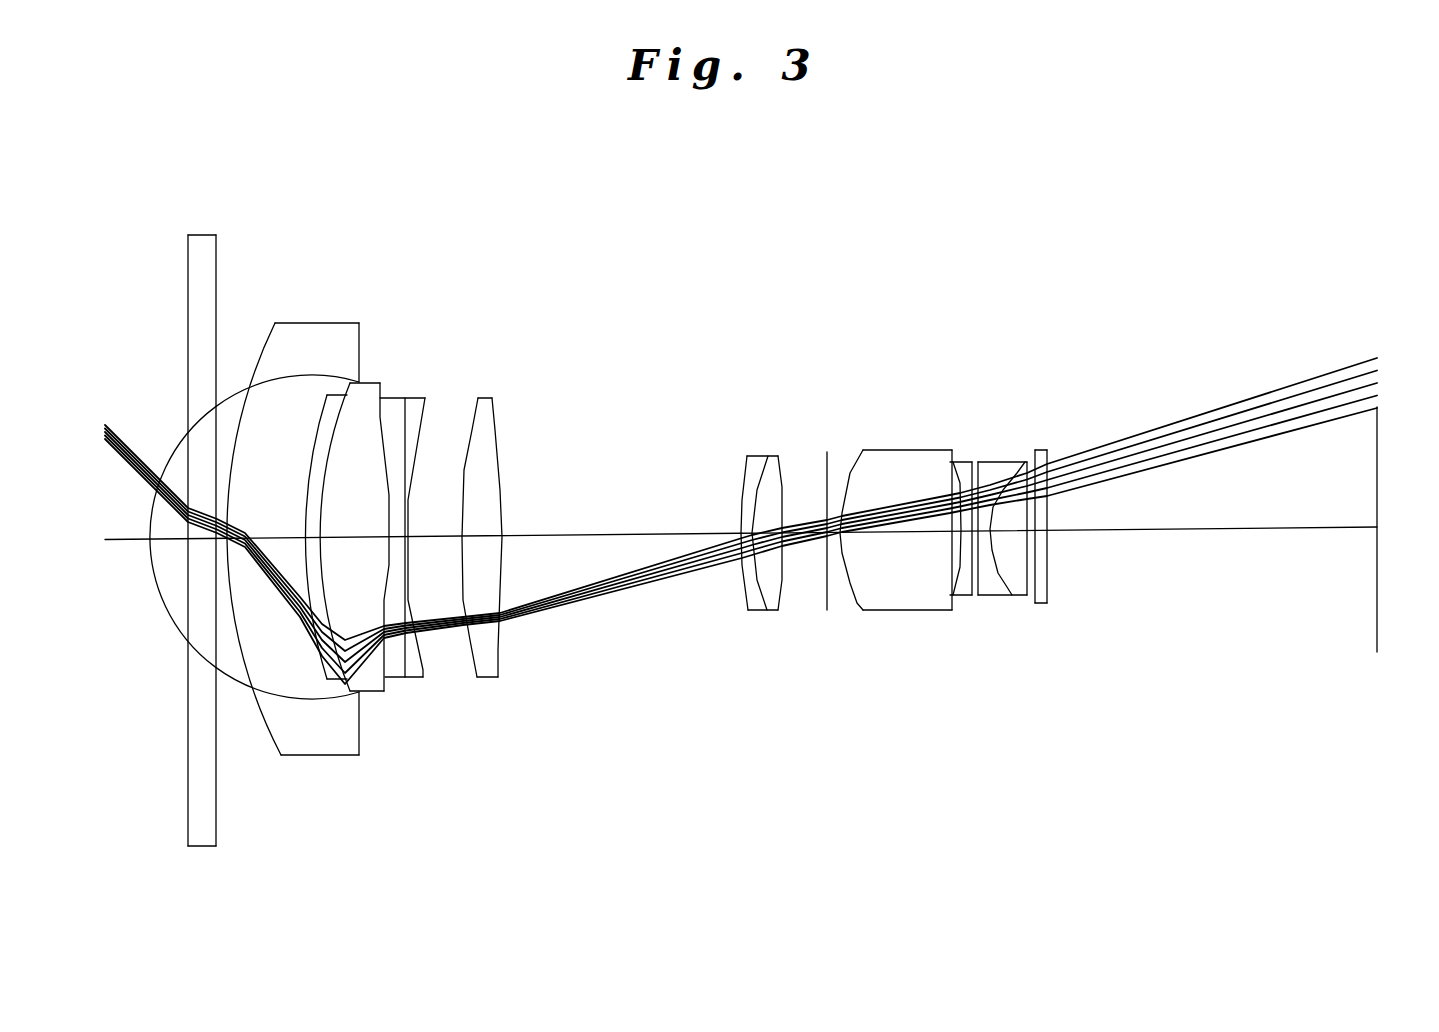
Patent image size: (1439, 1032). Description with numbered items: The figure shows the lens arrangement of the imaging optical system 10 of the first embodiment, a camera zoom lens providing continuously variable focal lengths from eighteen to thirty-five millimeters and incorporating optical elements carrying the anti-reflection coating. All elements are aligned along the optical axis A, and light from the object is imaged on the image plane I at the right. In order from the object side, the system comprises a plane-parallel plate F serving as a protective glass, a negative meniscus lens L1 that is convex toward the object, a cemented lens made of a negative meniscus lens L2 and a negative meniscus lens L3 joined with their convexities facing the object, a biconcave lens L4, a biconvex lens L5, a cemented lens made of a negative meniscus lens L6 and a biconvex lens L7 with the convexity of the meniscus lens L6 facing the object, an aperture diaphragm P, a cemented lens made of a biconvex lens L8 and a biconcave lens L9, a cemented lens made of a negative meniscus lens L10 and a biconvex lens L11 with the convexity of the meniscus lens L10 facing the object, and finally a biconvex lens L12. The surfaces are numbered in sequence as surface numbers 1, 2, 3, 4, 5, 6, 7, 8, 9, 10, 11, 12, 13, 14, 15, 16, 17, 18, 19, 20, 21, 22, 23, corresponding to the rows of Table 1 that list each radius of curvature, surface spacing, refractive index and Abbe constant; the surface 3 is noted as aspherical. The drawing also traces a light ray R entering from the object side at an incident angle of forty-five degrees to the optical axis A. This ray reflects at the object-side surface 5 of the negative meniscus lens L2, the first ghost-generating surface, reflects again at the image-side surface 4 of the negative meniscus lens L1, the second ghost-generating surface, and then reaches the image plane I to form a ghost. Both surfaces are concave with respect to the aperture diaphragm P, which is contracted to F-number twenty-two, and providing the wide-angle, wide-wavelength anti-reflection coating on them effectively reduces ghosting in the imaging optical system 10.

The optical surface 1 is at (185, 843).
The optical surface 2 is at (221, 834).
The optical surface 3 is at (264, 732).
The image-side surface of negative meniscus lens L1 4 is at (327, 688).
The object-side surface of negative meniscus lens L2 5 is at (346, 677).
The optical surface 6 is at (356, 692).
The optical surface 7 is at (364, 690).
The optical surface 8 is at (388, 679).
The optical surface 9 is at (424, 663).
The imaging optical system 10 is at (474, 662).
The optical surface 11 is at (504, 668).
The optical surface 12 is at (745, 595).
The optical surface 13 is at (765, 603).
The optical surface 14 is at (785, 595).
The optical surface 15 is at (827, 612).
The optical surface 16 is at (853, 603).
The optical surface 17 is at (952, 585).
The optical surface 18 is at (957, 600).
The optical surface 19 is at (972, 598).
The optical surface 20 is at (1000, 598).
The optical surface 21 is at (1027, 598).
The optical surface 22 is at (1038, 606).
The optical surface 23 is at (1050, 603).
The plane-parallel plate F is at (199, 530).
The light ray R is at (105, 425).
The optical axis A is at (125, 546).
The aperture diaphragm P is at (823, 531).
The image plane I is at (1379, 407).
The negative meniscus lens L1 is at (254, 540).
The negative meniscus lens L2 is at (329, 540).
The negative meniscus lens L3 is at (367, 540).
The biconcave lens L4 is at (423, 543).
The biconvex lens L5 is at (794, 496).
The negative meniscus lens L6 is at (739, 550).
The biconvex lens L7 is at (787, 531).
The biconvex lens L8 is at (895, 550).
The biconcave lens L9 is at (969, 550).
The negative meniscus lens L10 is at (1014, 528).
The biconvex lens L11 is at (1068, 548).
The biconvex lens L12 is at (1111, 528).